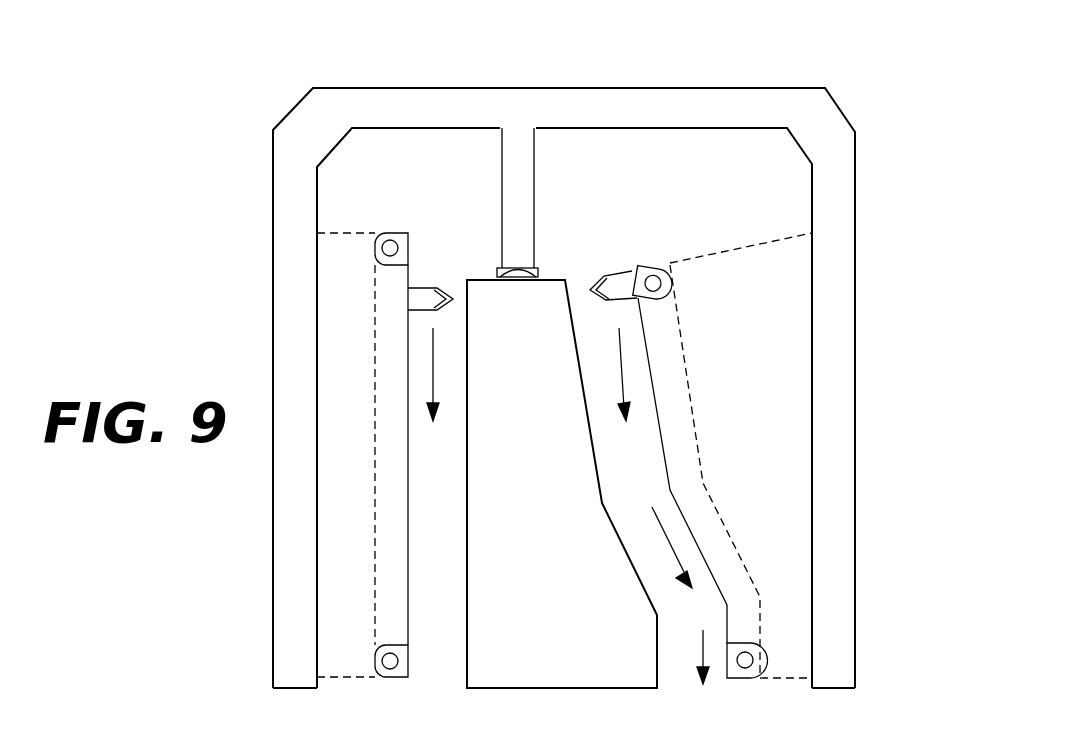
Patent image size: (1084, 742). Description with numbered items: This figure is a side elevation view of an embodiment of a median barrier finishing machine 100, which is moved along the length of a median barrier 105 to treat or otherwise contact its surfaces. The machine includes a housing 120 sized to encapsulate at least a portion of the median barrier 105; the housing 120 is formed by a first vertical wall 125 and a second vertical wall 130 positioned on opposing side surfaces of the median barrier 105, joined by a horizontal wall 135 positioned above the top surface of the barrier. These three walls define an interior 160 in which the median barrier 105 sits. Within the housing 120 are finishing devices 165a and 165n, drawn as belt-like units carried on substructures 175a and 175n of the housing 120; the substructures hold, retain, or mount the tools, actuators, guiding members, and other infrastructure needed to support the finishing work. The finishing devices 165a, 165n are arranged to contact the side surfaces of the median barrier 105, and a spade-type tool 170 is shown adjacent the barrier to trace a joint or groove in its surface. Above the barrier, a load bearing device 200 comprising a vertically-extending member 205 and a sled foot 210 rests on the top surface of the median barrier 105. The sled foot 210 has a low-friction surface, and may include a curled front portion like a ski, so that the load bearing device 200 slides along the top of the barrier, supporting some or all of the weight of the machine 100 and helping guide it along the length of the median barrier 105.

The median barrier finishing machine 100 is at (897, 650).
The median barrier 105 is at (553, 497).
The housing 120 is at (565, 371).
The first vertical wall 125 is at (273, 326).
The second vertical wall 130 is at (857, 326).
The horizontal wall 135 is at (693, 88).
The interior 160 is at (764, 194).
The finishing device 165a is at (382, 354).
The finishing device 165n is at (683, 340).
The spade-type tool 170 is at (447, 308).
The substructure 175a is at (378, 455).
The substructure 175n is at (701, 474).
The load bearing device 200 is at (536, 210).
The vertically-extending member 205 is at (502, 180).
The sled foot 210 is at (538, 275).